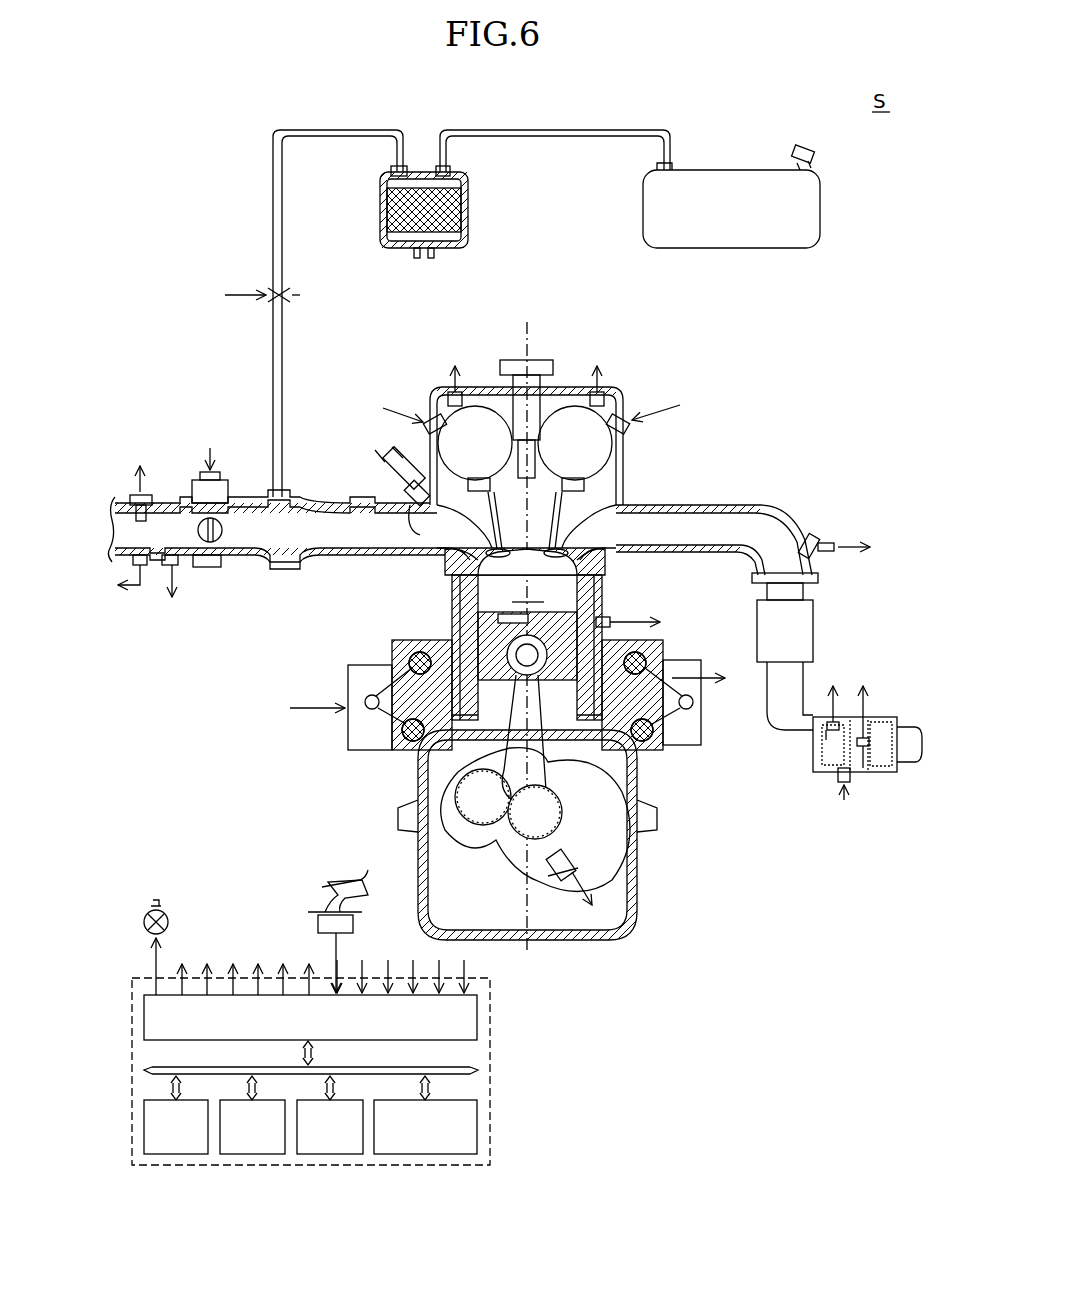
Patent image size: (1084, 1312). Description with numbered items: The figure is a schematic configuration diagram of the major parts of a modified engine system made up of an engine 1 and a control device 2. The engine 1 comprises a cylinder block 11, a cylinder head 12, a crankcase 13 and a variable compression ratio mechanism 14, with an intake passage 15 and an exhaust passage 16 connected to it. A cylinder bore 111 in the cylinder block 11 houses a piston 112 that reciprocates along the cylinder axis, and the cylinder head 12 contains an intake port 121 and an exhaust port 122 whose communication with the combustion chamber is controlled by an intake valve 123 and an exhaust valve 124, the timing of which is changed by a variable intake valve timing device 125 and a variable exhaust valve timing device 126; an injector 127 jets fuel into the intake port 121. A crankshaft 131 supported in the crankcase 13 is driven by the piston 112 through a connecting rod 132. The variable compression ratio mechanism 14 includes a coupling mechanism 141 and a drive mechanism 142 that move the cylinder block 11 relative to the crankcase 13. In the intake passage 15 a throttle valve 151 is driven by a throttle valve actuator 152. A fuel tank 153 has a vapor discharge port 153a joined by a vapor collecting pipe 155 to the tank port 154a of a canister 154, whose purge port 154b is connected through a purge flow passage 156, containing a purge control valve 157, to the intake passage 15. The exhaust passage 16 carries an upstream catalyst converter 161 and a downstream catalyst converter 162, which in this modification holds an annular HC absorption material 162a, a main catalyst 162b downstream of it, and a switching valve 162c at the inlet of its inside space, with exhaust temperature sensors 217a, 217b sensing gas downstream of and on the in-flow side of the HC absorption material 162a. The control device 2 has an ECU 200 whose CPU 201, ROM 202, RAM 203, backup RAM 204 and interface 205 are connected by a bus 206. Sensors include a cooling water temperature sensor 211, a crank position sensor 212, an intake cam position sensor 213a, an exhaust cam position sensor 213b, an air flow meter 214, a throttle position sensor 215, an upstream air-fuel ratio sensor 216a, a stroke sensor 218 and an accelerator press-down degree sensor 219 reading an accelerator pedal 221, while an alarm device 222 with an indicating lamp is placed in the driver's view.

The engine 1 is at (772, 398).
The control device 2 is at (114, 1210).
The cylinder block 11 is at (612, 580).
The cylinder head 12 is at (628, 384).
The crankcase 13 is at (656, 824).
The variable compression ratio mechanism 14 is at (512, 736).
The intake passage 15 is at (275, 568).
The exhaust passage 16 is at (708, 500).
The cylinder bore 111 is at (480, 598).
The piston 112 is at (478, 622).
The intake port 121 is at (420, 528).
The exhaust port 122 is at (640, 505).
The intake valve 123 is at (452, 570).
The exhaust valve 124 is at (580, 548).
The variable intake valve timing device 125 is at (475, 405).
The variable exhaust valve timing device 126 is at (573, 405).
The injector 127 is at (392, 458).
The crankshaft 131 is at (520, 832).
The connecting rod 132 is at (552, 726).
The coupling mechanism 141 is at (692, 712).
The drive mechanism 142 is at (370, 752).
The throttle valve 151 is at (222, 560).
The throttle valve actuator 152 is at (195, 480).
The fuel tank 153 is at (732, 250).
The vapor discharge port 153a is at (680, 168).
The canister 154 is at (469, 208).
The tank port 154a is at (452, 170).
The purge port 154b is at (391, 170).
The vapor collecting pipe 155 is at (558, 130).
The purge flow passage 156 is at (271, 170).
The purge control valve 157 is at (270, 290).
The upstream catalyst converter 161 is at (812, 622).
The downstream catalyst converter 162 is at (892, 775).
The HC absorption material 162a is at (837, 697).
The main catalyst 162b is at (892, 716).
The switching valve 162c is at (836, 785).
The ECU 200 is at (492, 1152).
The CPU 201 is at (175, 1155).
The ROM 202 is at (252, 1155).
The RAM 203 is at (330, 1155).
The backup RAM 204 is at (425, 1155).
The interface 205 is at (478, 1018).
The bus 206 is at (478, 1064).
The cooling water temperature sensor 211 is at (614, 614).
The crank position sensor 212 is at (556, 878).
The intake cam position sensor 213a is at (450, 390).
The exhaust cam position sensor 213b is at (600, 390).
The air flow meter 214 is at (132, 496).
The throttle position sensor 215 is at (205, 572).
The upstream air-fuel ratio sensor 216a is at (822, 540).
The exhaust temperature sensor 217a is at (863, 770).
The exhaust temperature sensor 217b is at (822, 745).
The stroke sensor 218 is at (672, 670).
The accelerator press-down degree sensor 219 is at (318, 924).
The accelerator pedal 221 is at (322, 890).
The alarm device 222 is at (143, 924).